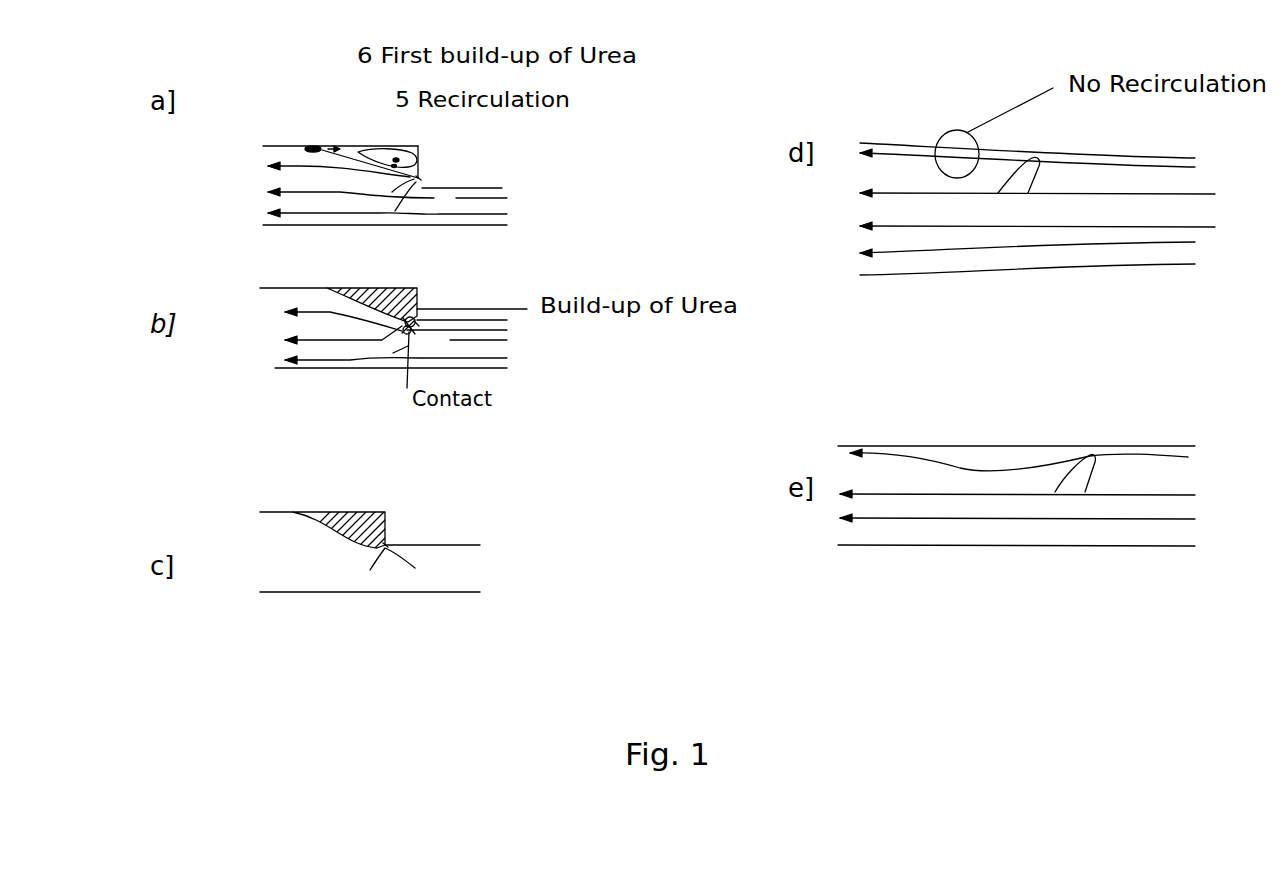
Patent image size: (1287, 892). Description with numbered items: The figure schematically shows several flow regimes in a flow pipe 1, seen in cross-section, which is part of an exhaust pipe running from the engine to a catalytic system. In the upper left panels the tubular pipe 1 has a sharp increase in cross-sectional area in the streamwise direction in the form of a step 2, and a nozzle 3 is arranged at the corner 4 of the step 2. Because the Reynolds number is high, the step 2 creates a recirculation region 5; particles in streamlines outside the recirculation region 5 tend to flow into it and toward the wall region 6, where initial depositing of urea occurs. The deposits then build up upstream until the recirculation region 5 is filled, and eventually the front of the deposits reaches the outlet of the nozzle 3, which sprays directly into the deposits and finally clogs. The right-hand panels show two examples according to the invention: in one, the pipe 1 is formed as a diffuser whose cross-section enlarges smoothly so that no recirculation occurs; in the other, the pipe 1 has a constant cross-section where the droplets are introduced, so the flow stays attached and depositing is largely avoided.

The flow pipe 1 is at (373, 234).
The step 2 is at (418, 162).
The nozzle 3 is at (420, 181).
The corner 4 is at (420, 179).
The recirculation region 5 is at (397, 150).
The region of the wall where initial depositing occurs 6 is at (347, 76).